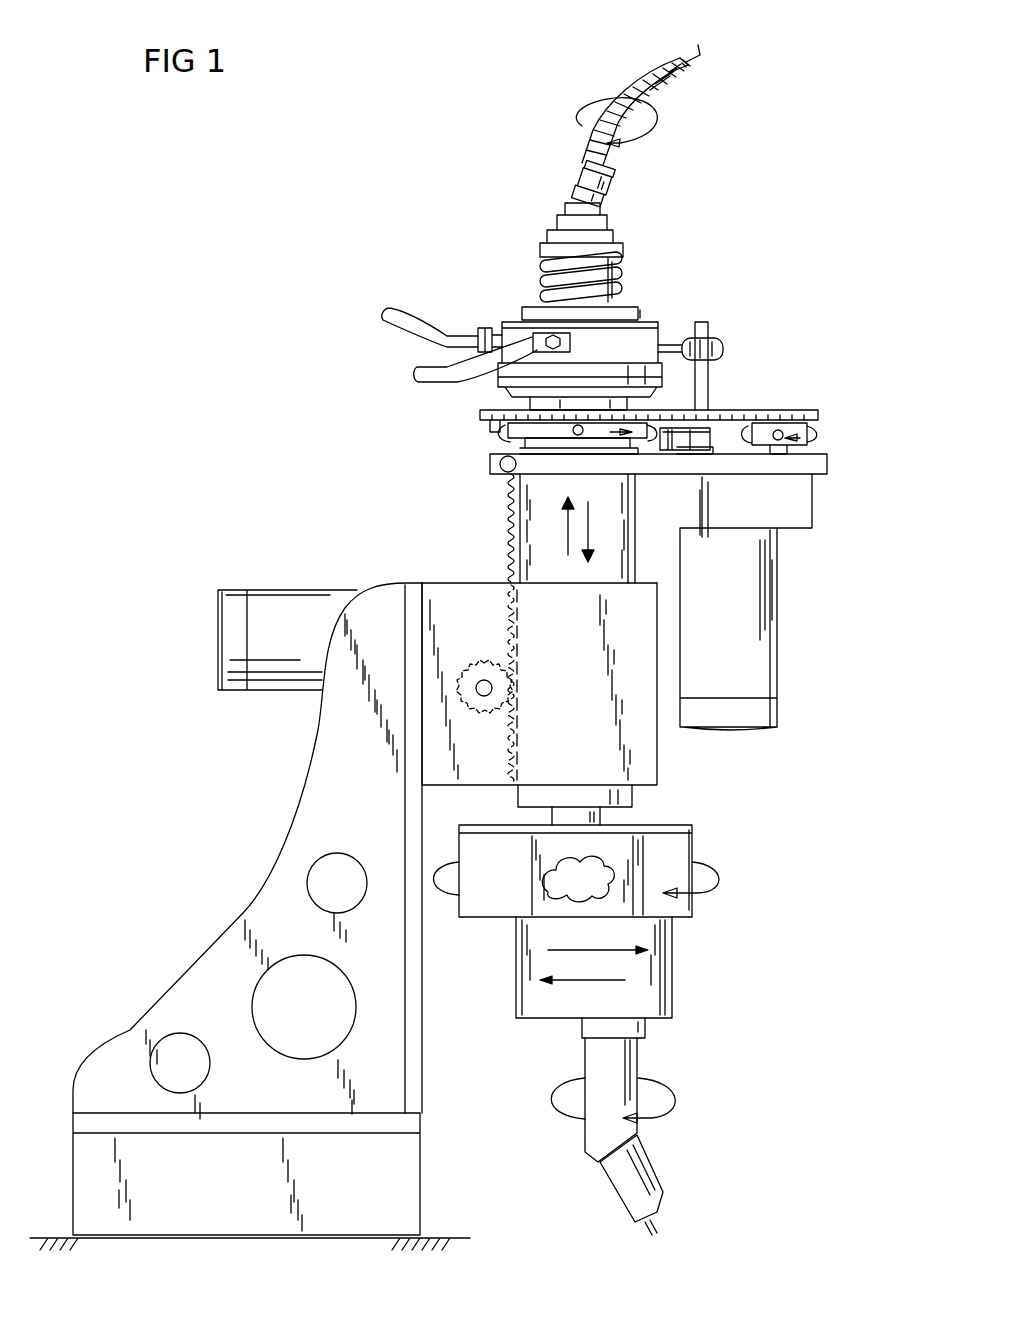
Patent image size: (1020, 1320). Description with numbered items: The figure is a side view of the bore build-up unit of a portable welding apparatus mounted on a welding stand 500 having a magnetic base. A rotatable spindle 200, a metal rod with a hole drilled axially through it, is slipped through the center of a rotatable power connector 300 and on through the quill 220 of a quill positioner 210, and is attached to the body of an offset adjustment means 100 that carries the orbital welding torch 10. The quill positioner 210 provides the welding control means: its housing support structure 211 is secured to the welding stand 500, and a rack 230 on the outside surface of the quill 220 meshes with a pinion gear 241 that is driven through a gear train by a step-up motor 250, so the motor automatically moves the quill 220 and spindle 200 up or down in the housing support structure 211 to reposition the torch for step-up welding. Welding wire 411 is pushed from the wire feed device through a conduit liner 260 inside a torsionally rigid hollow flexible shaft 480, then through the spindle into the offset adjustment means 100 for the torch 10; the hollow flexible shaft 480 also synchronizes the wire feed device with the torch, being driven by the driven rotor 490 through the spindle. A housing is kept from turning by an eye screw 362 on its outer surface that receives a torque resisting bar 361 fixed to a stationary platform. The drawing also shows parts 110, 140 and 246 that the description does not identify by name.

The orbital welding torch 10 is at (643, 1067).
The offset adjustment means 100 is at (613, 1011).
The horizontal slide 110 is at (512, 993).
The rotary head block 140 is at (480, 907).
The rotatable spindle 200 is at (605, 815).
The quill positioner 210 is at (605, 640).
The housing support structure 211 is at (618, 687).
The quill 220 is at (636, 545).
The rack 230 is at (507, 522).
The pinion gear 241 is at (489, 655).
The switch block 246 is at (668, 450).
The step-up motor 250 is at (283, 590).
The conduit liner 260 is at (657, 70).
The rotatable power connector 300 is at (604, 375).
The torque resisting bar 361 is at (710, 385).
The eye screw 362 is at (725, 340).
The welding wire 411 is at (698, 45).
The hollow flexible shaft 480 is at (644, 86).
The driven rotor 490 is at (575, 212).
The welding stand 500 is at (273, 902).